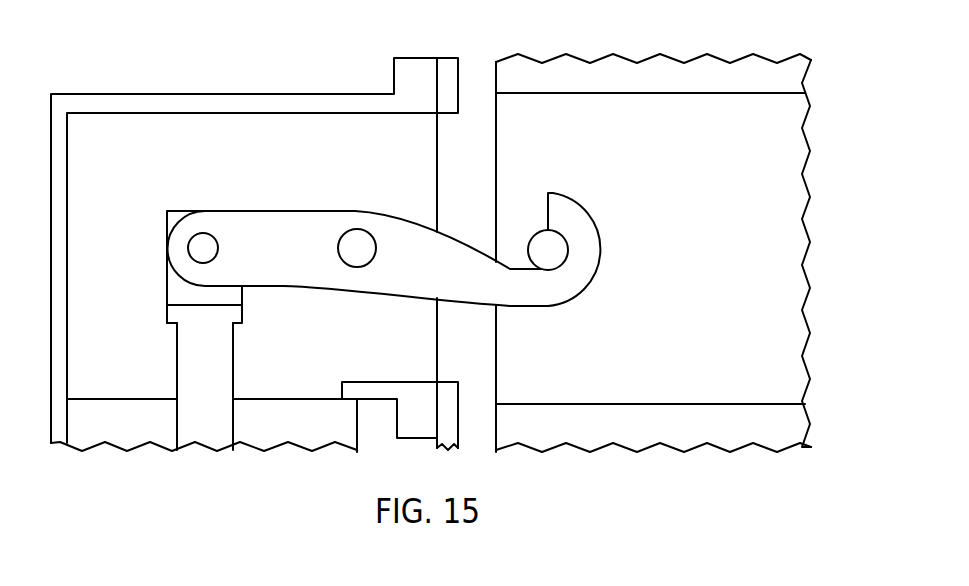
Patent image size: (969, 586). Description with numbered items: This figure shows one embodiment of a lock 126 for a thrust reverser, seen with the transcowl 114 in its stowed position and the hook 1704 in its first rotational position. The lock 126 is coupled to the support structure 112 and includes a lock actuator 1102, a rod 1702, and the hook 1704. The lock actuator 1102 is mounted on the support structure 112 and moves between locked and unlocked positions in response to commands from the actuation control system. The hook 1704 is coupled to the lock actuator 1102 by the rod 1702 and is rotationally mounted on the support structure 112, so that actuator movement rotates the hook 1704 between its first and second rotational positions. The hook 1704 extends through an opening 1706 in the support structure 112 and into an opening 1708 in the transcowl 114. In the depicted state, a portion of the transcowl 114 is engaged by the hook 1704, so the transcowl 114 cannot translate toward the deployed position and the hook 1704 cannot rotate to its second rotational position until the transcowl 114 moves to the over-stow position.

The lock 126 is at (104, 140).
The support structure 112 is at (446, 80).
The transcowl 114 is at (703, 75).
The lock actuator 1102 is at (320, 431).
The rod 1702 is at (190, 369).
The hook 1704 is at (254, 240).
The opening 1706 is at (452, 137).
The opening 1708 is at (790, 250).